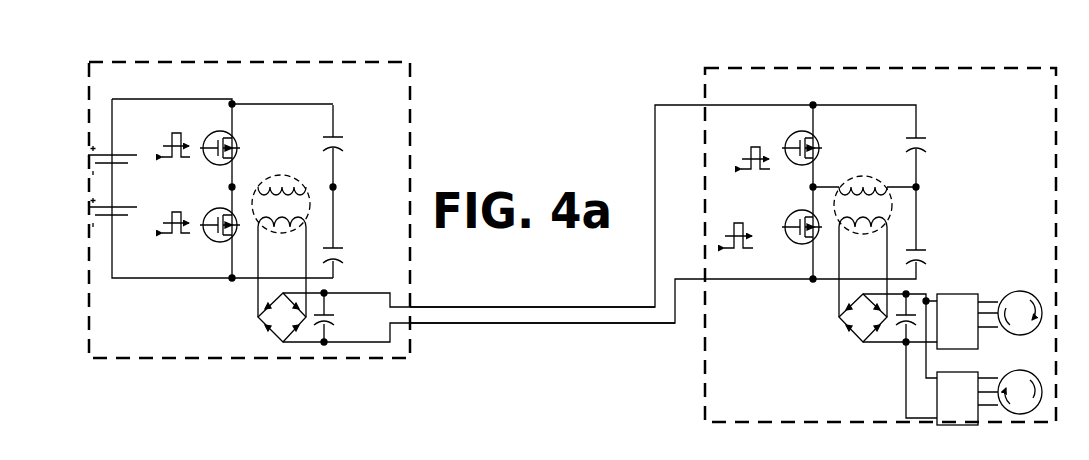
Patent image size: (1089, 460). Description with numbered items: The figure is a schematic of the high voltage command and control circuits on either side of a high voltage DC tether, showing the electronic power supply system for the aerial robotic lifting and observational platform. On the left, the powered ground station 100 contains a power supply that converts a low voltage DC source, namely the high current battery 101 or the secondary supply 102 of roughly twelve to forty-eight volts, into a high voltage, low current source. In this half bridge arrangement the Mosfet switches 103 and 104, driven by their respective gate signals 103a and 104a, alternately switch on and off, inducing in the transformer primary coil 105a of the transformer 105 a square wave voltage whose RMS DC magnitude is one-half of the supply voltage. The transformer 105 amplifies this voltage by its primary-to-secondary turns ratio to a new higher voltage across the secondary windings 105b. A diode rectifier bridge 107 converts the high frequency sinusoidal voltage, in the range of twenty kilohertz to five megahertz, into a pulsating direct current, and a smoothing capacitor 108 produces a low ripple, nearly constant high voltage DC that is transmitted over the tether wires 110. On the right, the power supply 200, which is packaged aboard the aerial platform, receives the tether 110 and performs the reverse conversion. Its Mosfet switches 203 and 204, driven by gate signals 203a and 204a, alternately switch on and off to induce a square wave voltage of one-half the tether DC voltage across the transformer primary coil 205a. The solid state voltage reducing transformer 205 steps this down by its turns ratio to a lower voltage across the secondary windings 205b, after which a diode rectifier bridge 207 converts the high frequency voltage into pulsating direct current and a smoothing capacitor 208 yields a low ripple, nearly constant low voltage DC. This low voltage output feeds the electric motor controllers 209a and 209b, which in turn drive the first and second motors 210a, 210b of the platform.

The powered ground station 100 is at (247, 54).
The battery 101 is at (128, 150).
The secondary supply 102 is at (127, 202).
The Mosfet switch 103 is at (228, 125).
The switching control signal 103a is at (175, 128).
The Mosfet switch 104 is at (228, 207).
The switching control signal 104a is at (177, 238).
The transformer 105 is at (317, 202).
The transformer primary coil 105a is at (292, 190).
The secondary windings 105b is at (282, 228).
The diode rectifier bridge 107 is at (254, 322).
The smoothing capacitor 108 is at (339, 320).
The tether wires 110 is at (466, 319).
The power supply 200 is at (853, 60).
The Mosfet switch 203 is at (808, 127).
The switching control signal 203a is at (752, 138).
The Mosfet switch 204 is at (807, 207).
The switching control signal 204a is at (737, 255).
The voltage reducing transformer 205 is at (879, 199).
The transformer primary coil 205a is at (865, 194).
The secondary windings 205b is at (862, 229).
The diode rectifier bridge 207 is at (833, 308).
The smoothing capacitor 208 is at (899, 321).
The electric motor controller 209a is at (954, 319).
The electric motor controller 209b is at (959, 402).
The first motor 210a is at (1012, 298).
The second motor 210b is at (1020, 406).